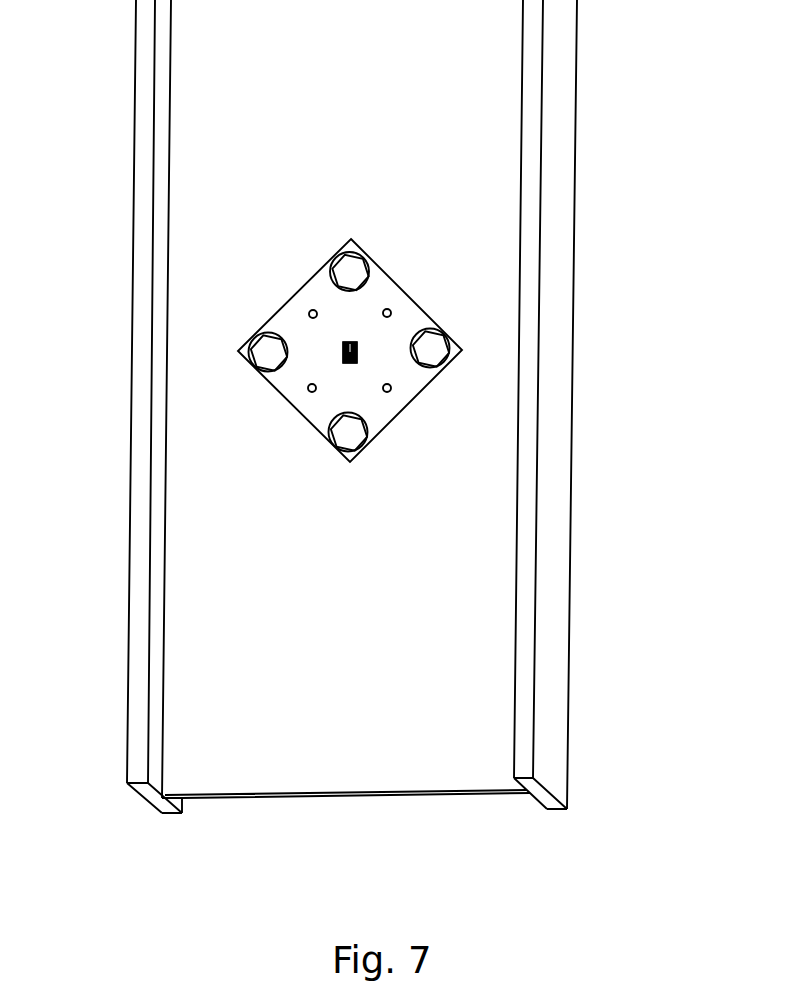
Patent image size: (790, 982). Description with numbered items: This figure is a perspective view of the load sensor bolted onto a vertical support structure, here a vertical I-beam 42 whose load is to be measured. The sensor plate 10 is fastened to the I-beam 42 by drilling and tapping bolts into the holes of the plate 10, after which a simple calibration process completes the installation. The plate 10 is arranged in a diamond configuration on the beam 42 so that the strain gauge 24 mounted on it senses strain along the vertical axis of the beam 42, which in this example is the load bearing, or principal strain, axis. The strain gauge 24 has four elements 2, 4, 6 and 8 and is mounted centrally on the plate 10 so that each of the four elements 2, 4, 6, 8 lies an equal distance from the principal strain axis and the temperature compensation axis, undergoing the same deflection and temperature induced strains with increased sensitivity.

The vertical I-beam 42 is at (432, 406).
The plate 10 is at (492, 309).
The element 6 is at (236, 370).
The element 4 is at (208, 261).
The element 2 is at (191, 275).
The element 8 is at (529, 410).
The strain gauge 24 is at (543, 439).